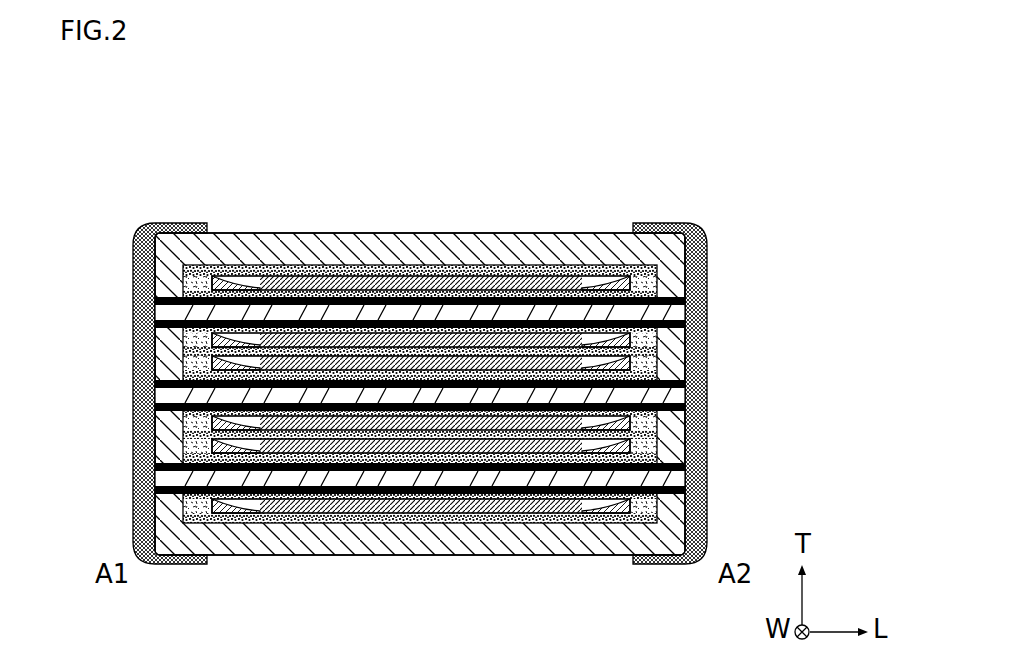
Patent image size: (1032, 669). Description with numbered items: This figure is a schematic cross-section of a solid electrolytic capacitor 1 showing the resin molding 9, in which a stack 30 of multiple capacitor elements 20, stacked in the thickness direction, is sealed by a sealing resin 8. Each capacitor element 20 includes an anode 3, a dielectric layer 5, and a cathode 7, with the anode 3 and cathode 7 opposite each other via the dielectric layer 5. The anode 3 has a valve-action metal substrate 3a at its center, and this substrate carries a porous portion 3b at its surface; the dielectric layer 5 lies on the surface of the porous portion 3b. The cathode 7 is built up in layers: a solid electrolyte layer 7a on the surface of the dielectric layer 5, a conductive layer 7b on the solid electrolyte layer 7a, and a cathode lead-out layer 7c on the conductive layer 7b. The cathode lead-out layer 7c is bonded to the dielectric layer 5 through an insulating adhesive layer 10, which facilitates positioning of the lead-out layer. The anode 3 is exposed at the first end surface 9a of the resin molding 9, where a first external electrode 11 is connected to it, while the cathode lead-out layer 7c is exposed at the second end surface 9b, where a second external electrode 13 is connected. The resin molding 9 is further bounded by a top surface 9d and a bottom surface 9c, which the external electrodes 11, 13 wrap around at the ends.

The multilayer ceramic capacitor 1 is at (425, 358).
The anode 3 is at (420, 307).
The valve-action metal substrate 3a is at (390, 305).
The porous portion 3b is at (425, 305).
The dielectric layer 5 is at (447, 290).
The cathode 7 is at (421, 317).
The solid electrolyte layer 7a is at (487, 288).
The conductive layer 7b is at (535, 286).
The cathode lead-out layer 7c is at (582, 285).
The sealing resin 8 is at (298, 247).
The resin molding 9 is at (422, 400).
The first end surface 9a is at (153, 443).
The second end surface 9b is at (707, 478).
The bottom surface 9c is at (270, 557).
The top surface 9d is at (235, 232).
The insulating adhesive layer 10 is at (190, 272).
The first external electrode 11 is at (133, 267).
The second external electrode 13 is at (707, 267).
The capacitor element 20 is at (431, 300).
The stack 30 is at (525, 530).